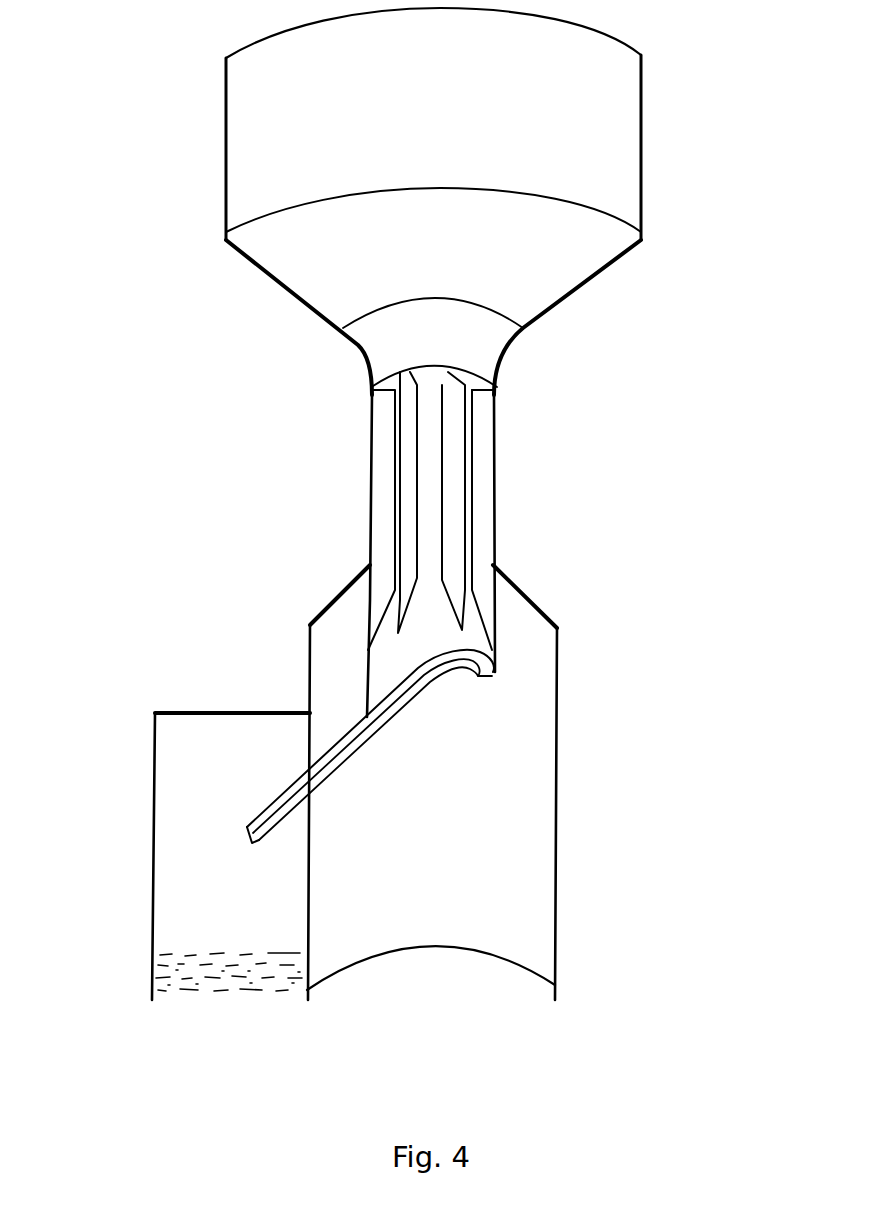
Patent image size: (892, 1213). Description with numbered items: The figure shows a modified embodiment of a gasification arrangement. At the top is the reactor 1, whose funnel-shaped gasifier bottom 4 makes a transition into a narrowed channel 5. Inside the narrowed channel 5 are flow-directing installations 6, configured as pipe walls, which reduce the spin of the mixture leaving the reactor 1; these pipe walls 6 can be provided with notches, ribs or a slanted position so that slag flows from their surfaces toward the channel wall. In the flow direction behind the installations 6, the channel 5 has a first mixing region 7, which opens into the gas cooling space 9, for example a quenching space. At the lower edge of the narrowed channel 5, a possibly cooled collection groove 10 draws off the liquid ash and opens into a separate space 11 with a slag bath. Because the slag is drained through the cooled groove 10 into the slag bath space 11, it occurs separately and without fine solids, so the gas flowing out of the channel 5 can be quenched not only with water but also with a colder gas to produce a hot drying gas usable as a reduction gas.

The reactor 1 is at (642, 128).
The funnel-shaped gasifier bottom 4 is at (583, 288).
The narrowed channel 5 is at (495, 537).
The flow-directing installations 6 is at (473, 407).
The first mixing region 7 is at (492, 700).
The gas cooling space 9 is at (547, 807).
The collection groove 10 is at (263, 810).
The slag bath space 11 is at (222, 750).